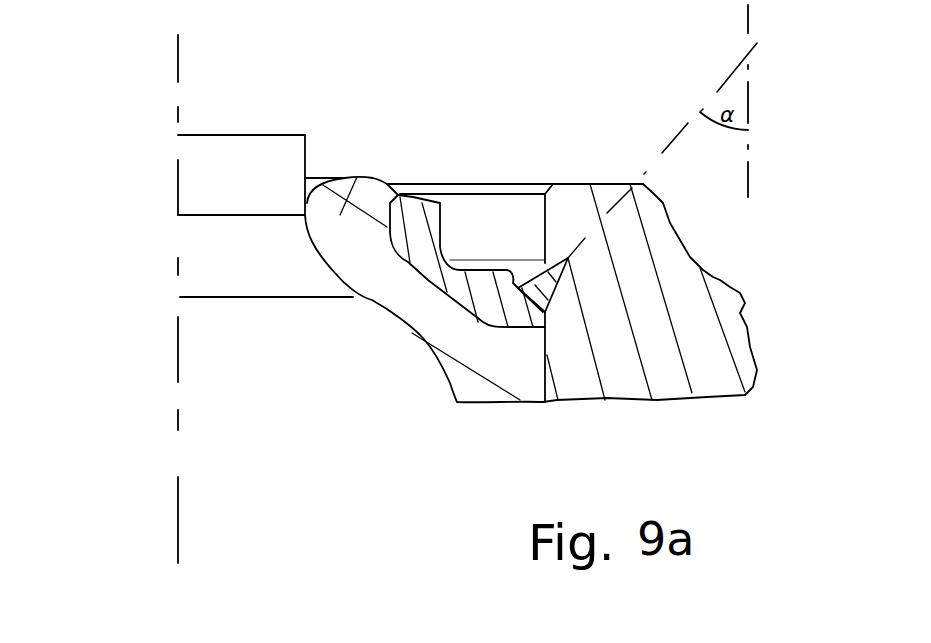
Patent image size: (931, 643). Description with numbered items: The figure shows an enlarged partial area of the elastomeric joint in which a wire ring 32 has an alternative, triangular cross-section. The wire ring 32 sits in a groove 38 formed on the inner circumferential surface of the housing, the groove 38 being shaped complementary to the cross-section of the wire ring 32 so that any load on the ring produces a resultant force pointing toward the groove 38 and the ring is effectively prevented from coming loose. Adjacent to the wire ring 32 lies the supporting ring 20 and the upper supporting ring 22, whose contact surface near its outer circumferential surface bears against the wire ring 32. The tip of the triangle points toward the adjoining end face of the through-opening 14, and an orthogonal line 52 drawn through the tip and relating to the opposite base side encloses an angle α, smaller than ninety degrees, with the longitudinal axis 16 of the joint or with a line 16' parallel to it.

The through-opening 14 is at (540, 215).
The longitudinal axis 16 is at (204, 292).
The line parallel to the longitudinal axis 16' is at (790, 101).
The supporting ring 20 is at (357, 173).
The upper supporting ring 22 is at (412, 212).
The wire ring 32 is at (540, 263).
The groove 38 is at (550, 283).
The orthogonal line 52 is at (673, 137).